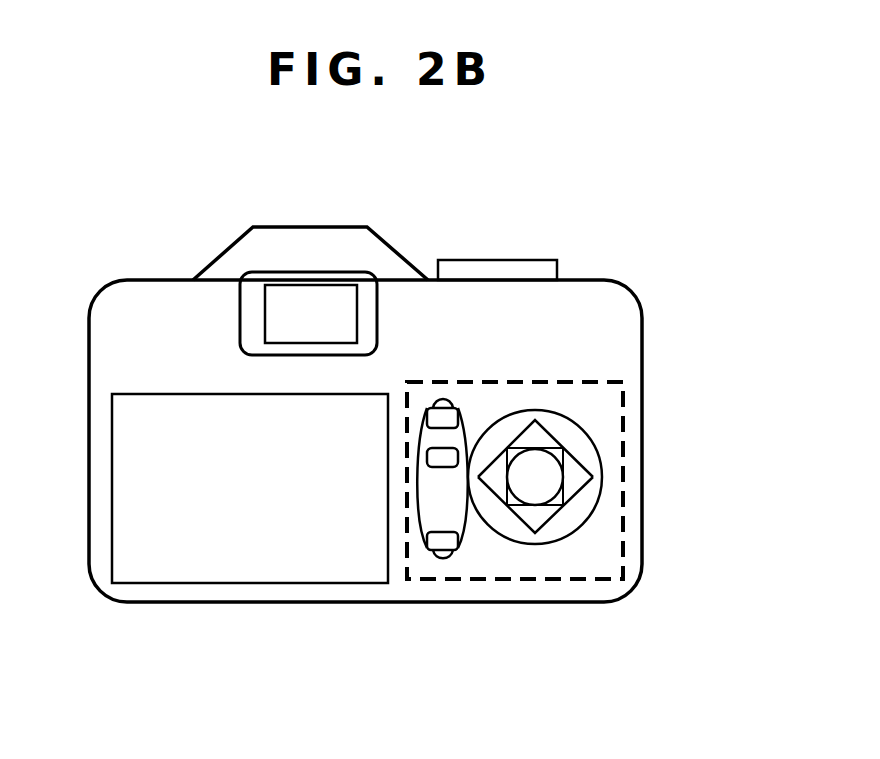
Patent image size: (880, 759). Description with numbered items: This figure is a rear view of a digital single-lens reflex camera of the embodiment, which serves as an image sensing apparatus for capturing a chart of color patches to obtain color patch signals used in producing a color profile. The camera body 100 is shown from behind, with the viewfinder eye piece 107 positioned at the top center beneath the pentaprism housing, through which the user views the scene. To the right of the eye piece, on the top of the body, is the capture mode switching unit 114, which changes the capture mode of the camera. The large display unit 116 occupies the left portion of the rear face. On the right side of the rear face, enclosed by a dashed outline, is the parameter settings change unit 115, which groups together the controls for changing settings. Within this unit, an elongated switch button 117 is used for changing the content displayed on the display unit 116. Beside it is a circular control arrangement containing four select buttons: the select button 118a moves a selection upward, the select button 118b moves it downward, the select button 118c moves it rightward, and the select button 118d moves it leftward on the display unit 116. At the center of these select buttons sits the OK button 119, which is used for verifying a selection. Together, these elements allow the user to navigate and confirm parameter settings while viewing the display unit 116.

The camera body 100 is at (297, 602).
The viewfinder eye piece 107 is at (310, 282).
The capture mode switching unit 114 is at (497, 270).
The parameter settings change unit 115 is at (442, 580).
The display unit 116 is at (158, 583).
The switch button 117 is at (447, 403).
The select button (upward) 118a is at (542, 433).
The select button (downward) 118b is at (543, 515).
The select button (rightward) 118c is at (587, 467).
The select button (leftward) 118d is at (490, 480).
The OK button 119 is at (550, 492).